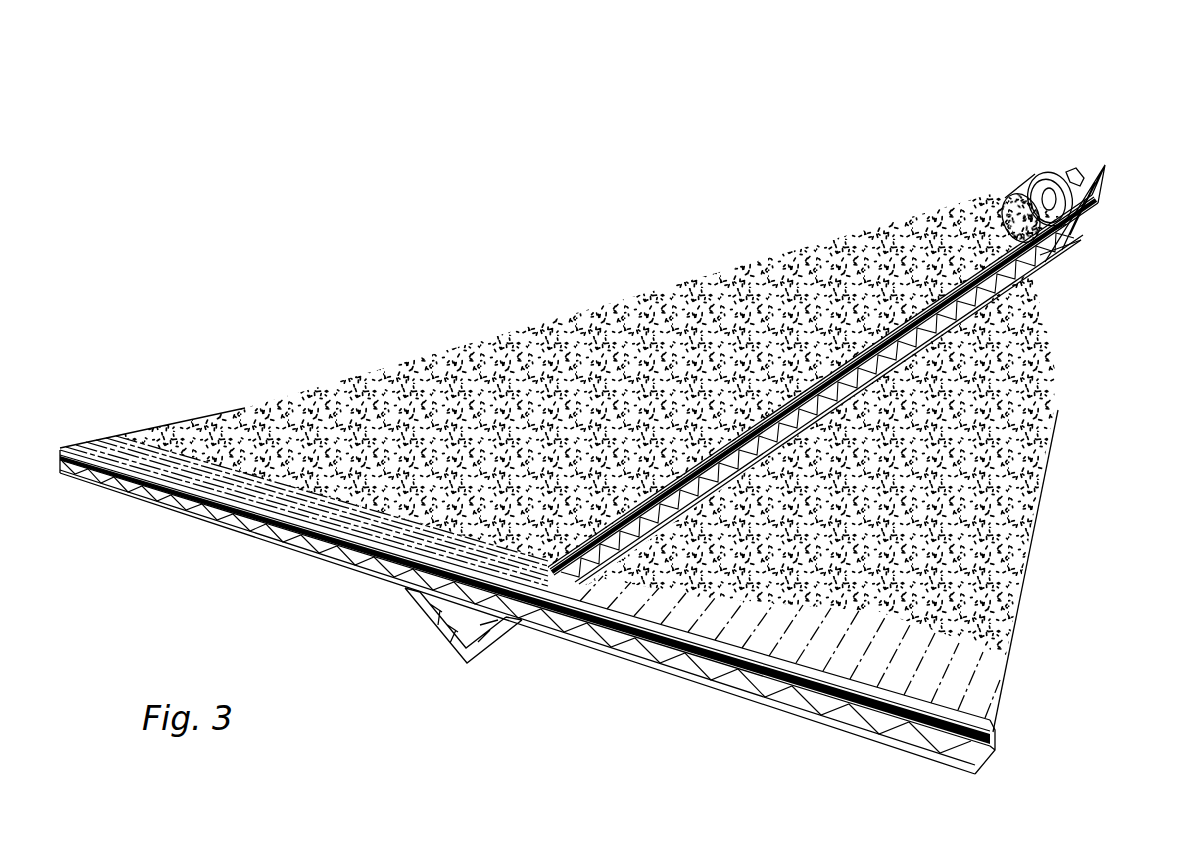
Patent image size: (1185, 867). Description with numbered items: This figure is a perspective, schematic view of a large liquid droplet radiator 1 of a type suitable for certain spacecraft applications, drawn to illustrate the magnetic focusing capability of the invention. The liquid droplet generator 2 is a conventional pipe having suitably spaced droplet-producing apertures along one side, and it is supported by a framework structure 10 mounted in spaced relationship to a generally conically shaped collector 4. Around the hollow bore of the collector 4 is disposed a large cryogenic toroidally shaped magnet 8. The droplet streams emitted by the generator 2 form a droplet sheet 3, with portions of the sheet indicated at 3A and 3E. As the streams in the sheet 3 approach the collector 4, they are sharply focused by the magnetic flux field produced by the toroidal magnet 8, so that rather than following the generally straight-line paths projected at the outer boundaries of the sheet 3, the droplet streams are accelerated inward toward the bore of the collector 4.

The liquid droplet radiator (LDR) 1 is at (1068, 312).
The liquid droplet generator 2 is at (975, 720).
The droplet sheet 3 is at (606, 461).
The fabric panel portion 3A is at (275, 405).
The fabric panel edge 3E is at (1020, 543).
The collector 4 is at (1020, 205).
The toroidally shaped magnet 8 is at (1080, 190).
The framework structure 10 is at (440, 640).